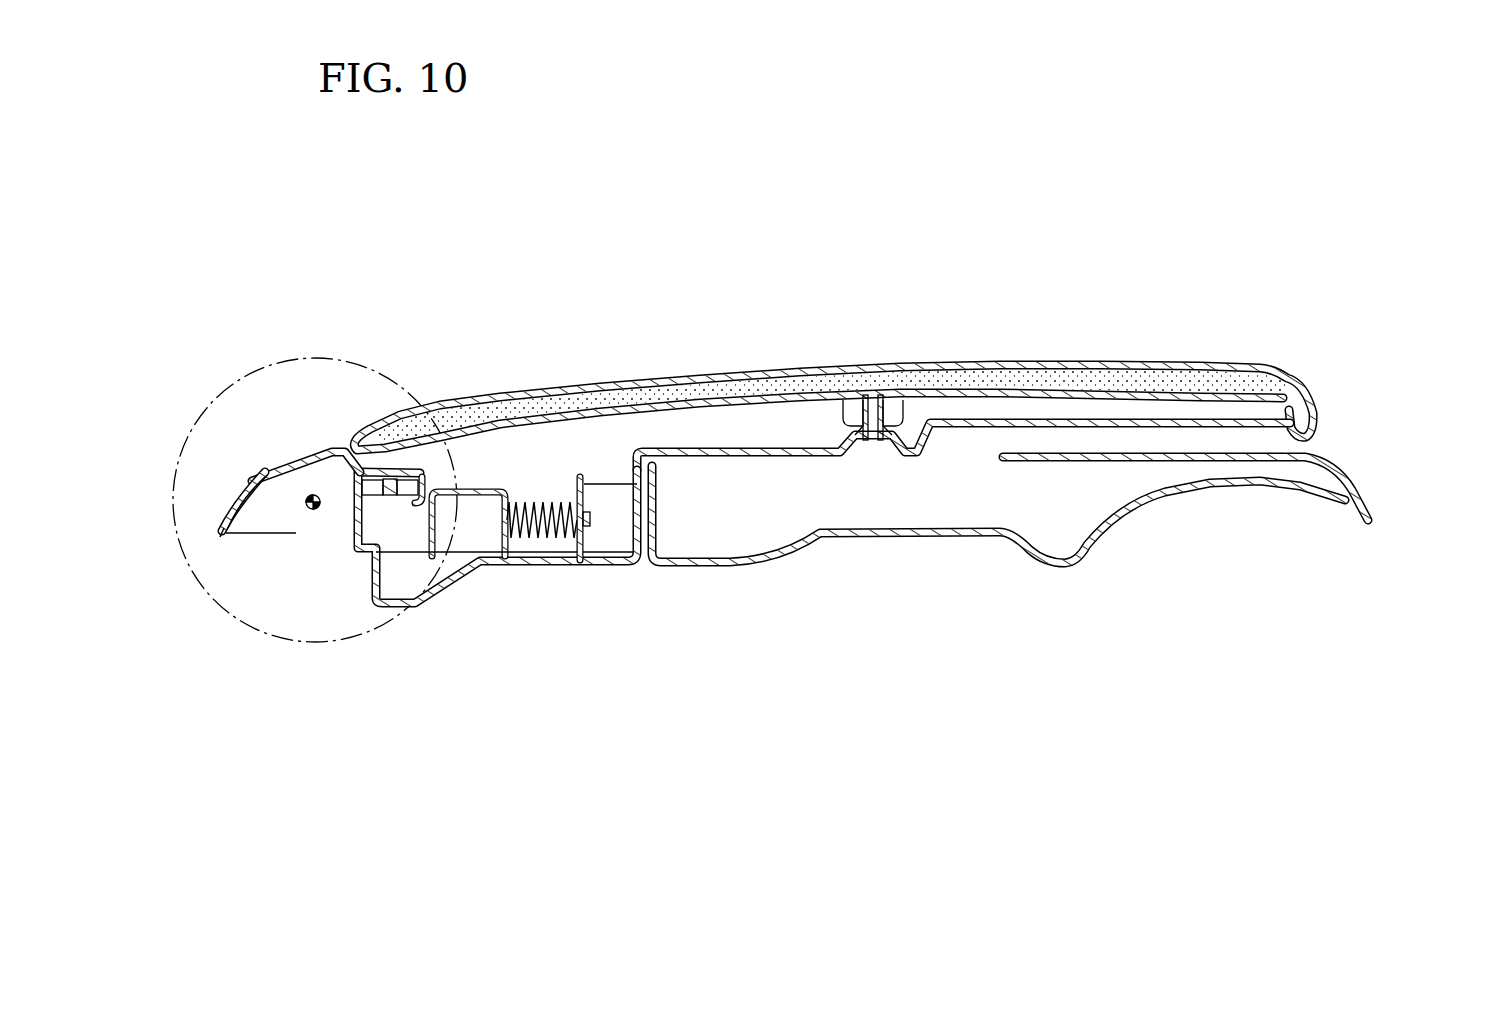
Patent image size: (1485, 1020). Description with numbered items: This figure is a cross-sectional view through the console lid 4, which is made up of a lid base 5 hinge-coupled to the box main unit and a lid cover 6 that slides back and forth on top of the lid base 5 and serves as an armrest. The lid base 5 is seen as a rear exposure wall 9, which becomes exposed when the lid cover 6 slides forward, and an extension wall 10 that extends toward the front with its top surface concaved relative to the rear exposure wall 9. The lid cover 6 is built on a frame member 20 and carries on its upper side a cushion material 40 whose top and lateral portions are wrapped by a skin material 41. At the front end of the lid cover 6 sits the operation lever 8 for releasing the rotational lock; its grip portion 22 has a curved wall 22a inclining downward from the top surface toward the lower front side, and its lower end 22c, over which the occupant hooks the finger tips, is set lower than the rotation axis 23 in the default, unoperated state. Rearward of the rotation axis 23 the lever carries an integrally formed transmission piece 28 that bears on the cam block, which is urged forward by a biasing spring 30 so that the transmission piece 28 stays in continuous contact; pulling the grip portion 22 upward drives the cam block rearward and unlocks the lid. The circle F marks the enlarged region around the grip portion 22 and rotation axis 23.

The console lid 4 is at (1430, 373).
The lid base 5 is at (1352, 458).
The lid cover 6 is at (1332, 404).
The operation lever 8 is at (271, 447).
The rear exposure wall 9 is at (1183, 455).
The extension wall 10 is at (797, 545).
The frame member 20 is at (787, 448).
The grip portion 22 is at (223, 502).
The curved wall 22a is at (243, 478).
The lower end 22c is at (222, 540).
The rotation axis 23 is at (313, 512).
The transmission piece 28 is at (404, 471).
The biasing spring 30 is at (537, 545).
The cushion material 40 is at (722, 385).
The skin material 41 is at (658, 377).
The enlarged region F is at (348, 360).